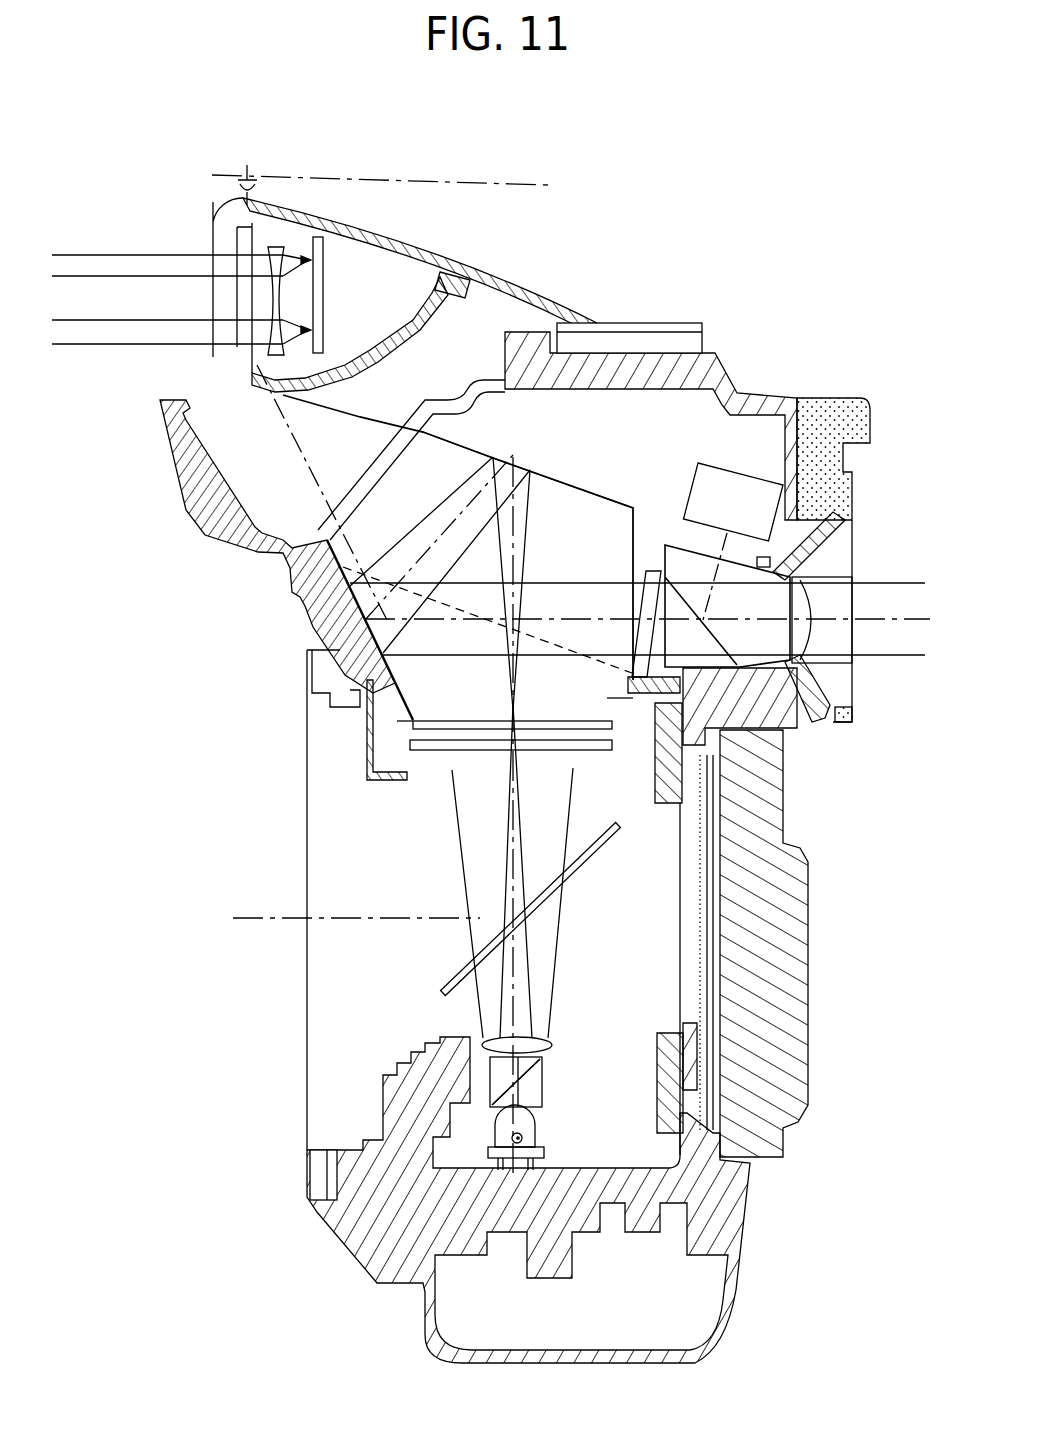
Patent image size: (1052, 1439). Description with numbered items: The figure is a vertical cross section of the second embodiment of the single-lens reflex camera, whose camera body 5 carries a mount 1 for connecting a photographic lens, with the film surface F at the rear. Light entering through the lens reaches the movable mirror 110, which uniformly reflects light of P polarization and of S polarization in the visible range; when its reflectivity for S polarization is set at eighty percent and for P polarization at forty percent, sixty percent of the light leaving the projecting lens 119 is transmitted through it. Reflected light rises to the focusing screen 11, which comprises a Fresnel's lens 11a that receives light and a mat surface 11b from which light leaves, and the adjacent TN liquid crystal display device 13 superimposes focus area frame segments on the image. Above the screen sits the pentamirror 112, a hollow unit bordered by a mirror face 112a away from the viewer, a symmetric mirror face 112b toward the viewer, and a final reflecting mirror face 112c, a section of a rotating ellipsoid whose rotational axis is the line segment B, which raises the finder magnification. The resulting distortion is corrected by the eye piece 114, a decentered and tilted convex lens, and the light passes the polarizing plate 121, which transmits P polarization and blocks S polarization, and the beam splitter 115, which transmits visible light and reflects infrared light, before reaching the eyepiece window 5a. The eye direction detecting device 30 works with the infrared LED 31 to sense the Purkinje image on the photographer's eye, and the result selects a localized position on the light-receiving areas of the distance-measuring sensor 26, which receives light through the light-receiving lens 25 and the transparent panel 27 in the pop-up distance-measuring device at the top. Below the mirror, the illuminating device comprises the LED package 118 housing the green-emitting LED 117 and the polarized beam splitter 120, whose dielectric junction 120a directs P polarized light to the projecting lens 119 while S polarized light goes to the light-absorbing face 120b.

The mount 1 is at (313, 1173).
The camera body 5 is at (813, 933).
The eyepiece window 5a is at (803, 635).
The focusing screen 11 is at (517, 772).
The Fresnel's lens 11a is at (565, 752).
The mat surface 11b is at (618, 738).
The TN liquid crystal display device 13 is at (413, 722).
The light-receiving lens 25 is at (276, 355).
The distance-measuring sensor 26 is at (330, 273).
The transparent panel 27 is at (243, 362).
The eye direction detecting device 30 is at (732, 463).
The LED 31 is at (803, 730).
The movable mirror 110 is at (590, 855).
The pentamirror 112 is at (567, 478).
The mirror face 112a is at (548, 486).
The mirror face 112b is at (579, 453).
The final reflecting mirror face 112c is at (297, 617).
The eye piece 114 is at (655, 572).
The beam splitter 115 is at (780, 600).
The LED 117 is at (523, 1138).
The LED package 118 is at (540, 1122).
The projecting lens 119 is at (557, 1035).
The polarized beam splitter 120 is at (508, 1054).
The junction 120a is at (517, 1077).
The light-absorbing face 120b is at (543, 1070).
The polarizing plate 121 is at (662, 553).
The line segment B is at (522, 186).
The film surface F is at (710, 953).